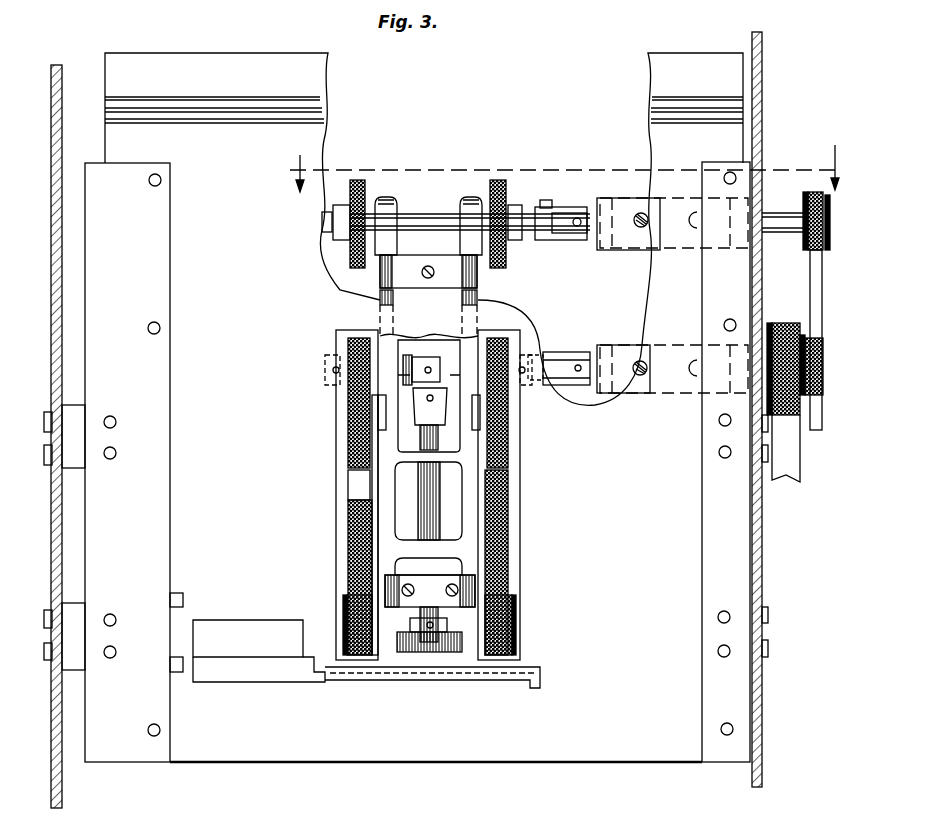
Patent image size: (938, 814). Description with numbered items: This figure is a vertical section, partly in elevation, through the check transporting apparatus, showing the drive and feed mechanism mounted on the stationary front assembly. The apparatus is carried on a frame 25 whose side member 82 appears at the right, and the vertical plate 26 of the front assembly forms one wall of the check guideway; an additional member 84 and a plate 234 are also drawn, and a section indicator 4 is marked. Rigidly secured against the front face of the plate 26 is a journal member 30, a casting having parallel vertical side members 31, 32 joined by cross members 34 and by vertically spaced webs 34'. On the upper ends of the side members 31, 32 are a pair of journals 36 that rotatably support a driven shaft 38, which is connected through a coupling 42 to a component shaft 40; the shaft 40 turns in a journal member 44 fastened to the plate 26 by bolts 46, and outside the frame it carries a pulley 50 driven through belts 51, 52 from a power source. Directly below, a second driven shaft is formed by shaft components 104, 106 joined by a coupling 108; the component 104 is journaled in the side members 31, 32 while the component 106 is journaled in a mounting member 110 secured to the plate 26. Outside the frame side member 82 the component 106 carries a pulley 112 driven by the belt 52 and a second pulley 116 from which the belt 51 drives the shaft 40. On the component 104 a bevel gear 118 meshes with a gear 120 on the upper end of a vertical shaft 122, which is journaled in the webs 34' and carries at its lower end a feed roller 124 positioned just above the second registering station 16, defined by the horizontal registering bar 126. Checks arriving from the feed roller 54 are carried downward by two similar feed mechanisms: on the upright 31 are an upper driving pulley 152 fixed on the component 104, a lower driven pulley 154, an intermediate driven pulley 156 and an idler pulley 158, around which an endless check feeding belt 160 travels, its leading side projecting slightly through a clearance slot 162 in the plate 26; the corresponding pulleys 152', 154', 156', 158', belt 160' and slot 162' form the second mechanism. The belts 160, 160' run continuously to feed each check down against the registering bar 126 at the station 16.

The section line 4- 4 is at (565, 158).
The second sheet registering station 16 is at (545, 650).
The frame 25 is at (68, 781).
The vertical plate 26 is at (215, 52).
The journal member 30 is at (518, 300).
The side member 31 is at (380, 298).
The side member 32 is at (460, 298).
The cross member 34 is at (450, 431).
The web 34' is at (514, 505).
The journal 36 is at (388, 197).
The driven shaft 38 is at (414, 212).
The component shaft 40 is at (592, 214).
The coupling 42 is at (555, 207).
The journal member 44 is at (628, 198).
The bolt 46 is at (635, 228).
The pulley 50 is at (825, 186).
The belt 51 is at (812, 278).
The belt 52 is at (795, 480).
The feed roller 54 is at (357, 180).
The frame side member 82 is at (762, 88).
The wall member 84 is at (711, 5).
The shaft component 104 is at (448, 352).
The shaft component 106 is at (585, 352).
The coupling 108 is at (555, 352).
The mounting member 110 is at (625, 345).
The pulley 112 is at (778, 323).
The second pulley 116 is at (825, 370).
The bevel gear 118 is at (403, 372).
The bevel gear 120 is at (413, 405).
The vertical shaft 122 is at (422, 525).
The feed roller 124 is at (410, 655).
The registering bar 126 is at (450, 680).
The upper driving pulley 152 is at (325, 495).
The upper driving pulley 152' is at (523, 403).
The lower driven pulley 154 is at (332, 625).
The lower driven pulley 154' is at (528, 625).
The intermediate driven pulley 156 is at (317, 485).
The intermediate driven pulley 156' is at (535, 487).
The idler pulley 158 is at (372, 428).
The idler pulley 158' is at (533, 451).
The check feeding belt 160 is at (318, 577).
The check feeding belt 160' is at (522, 562).
The clearance slot 162 is at (321, 525).
The clearance slot 162' is at (541, 566).
The mounting plate 234 is at (170, 312).